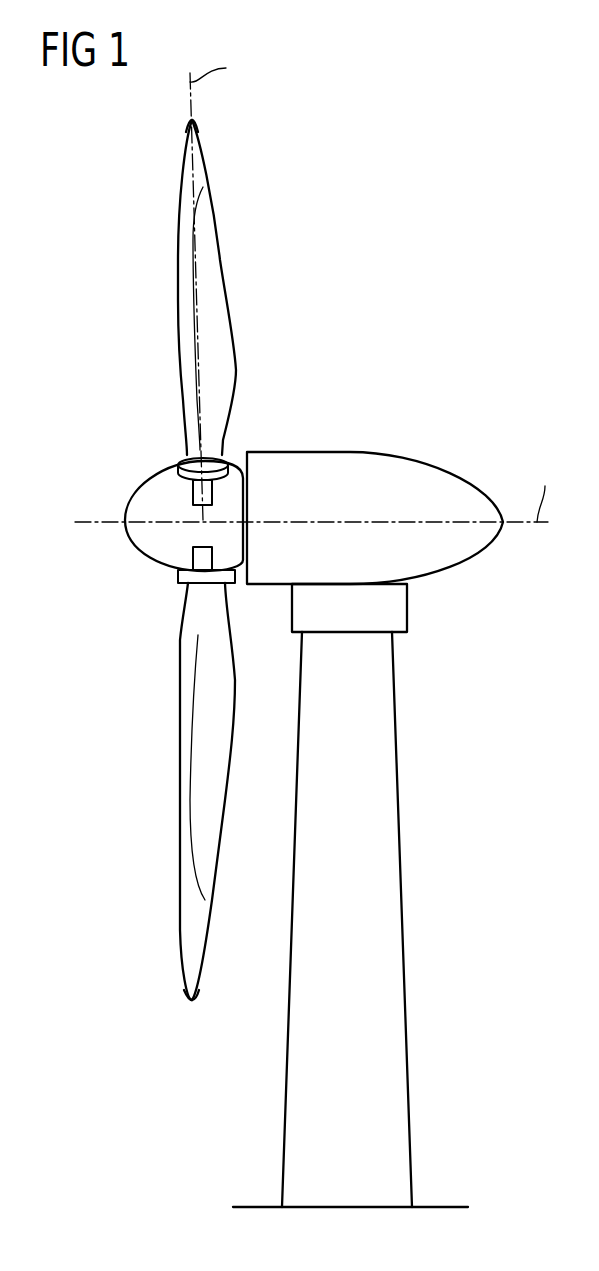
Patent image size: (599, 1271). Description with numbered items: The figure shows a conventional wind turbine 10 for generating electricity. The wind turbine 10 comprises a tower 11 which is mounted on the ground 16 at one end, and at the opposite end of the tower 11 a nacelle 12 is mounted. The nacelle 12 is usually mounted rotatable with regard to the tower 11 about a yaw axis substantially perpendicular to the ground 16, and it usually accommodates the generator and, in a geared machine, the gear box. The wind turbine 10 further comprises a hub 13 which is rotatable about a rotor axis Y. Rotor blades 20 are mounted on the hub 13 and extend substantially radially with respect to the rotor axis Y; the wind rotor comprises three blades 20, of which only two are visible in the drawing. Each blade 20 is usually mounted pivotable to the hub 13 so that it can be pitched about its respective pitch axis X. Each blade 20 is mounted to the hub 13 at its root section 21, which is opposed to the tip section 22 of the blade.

The wind turbine 10 is at (459, 339).
The tower 11 is at (393, 880).
The nacelle 12 is at (345, 452).
The hub 13 is at (109, 556).
The ground 16 is at (440, 1207).
The blade 20 is at (180, 285).
The root section 21 is at (214, 456).
The tip section 22 is at (192, 120).